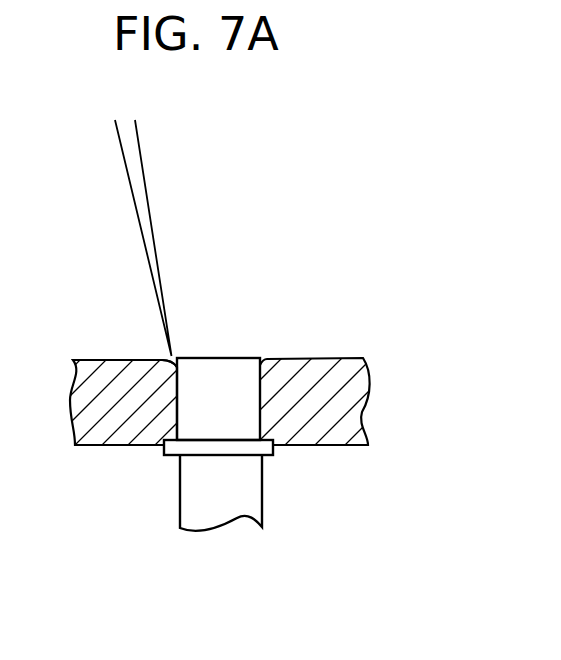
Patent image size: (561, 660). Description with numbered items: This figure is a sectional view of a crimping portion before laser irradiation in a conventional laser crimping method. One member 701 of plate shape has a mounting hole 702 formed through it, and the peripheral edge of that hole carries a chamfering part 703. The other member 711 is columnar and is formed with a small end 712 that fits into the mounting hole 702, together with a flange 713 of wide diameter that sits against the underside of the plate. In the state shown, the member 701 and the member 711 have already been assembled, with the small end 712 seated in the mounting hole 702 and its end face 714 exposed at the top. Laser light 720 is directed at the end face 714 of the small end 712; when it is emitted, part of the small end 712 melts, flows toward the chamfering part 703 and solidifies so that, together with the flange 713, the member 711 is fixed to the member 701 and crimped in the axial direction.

The one member 701 is at (103, 393).
The mounting hole 702 is at (176, 364).
The chamfering part 703 is at (265, 357).
The other member 711 is at (223, 495).
The small end 712 is at (232, 405).
The flange 713 is at (263, 444).
The end face 714 is at (222, 357).
The laser light 720 is at (150, 198).